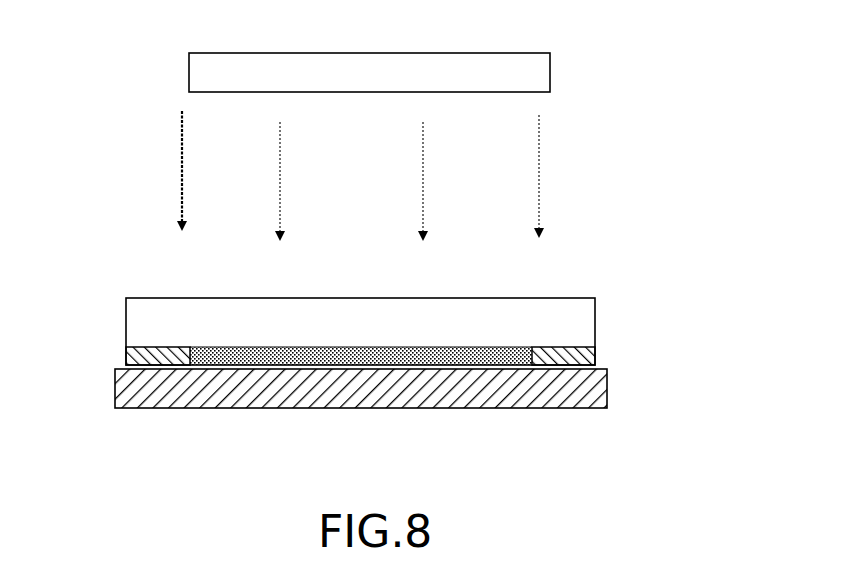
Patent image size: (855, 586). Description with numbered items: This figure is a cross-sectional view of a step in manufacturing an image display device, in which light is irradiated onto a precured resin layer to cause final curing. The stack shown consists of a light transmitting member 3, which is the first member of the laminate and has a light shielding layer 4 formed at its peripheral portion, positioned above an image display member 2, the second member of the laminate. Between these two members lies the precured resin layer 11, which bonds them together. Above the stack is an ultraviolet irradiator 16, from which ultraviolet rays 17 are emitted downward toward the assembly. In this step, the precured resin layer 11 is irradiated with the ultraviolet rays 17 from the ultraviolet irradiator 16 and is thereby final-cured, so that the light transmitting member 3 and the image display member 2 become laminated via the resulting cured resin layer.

The image display member 2 is at (607, 385).
The light transmitting member 3 is at (595, 325).
The light shielding layer 4 is at (595, 353).
The precured resin layer 11 is at (232, 361).
The ultraviolet irradiator 16 is at (550, 75).
The ultraviolet rays 17 is at (543, 178).